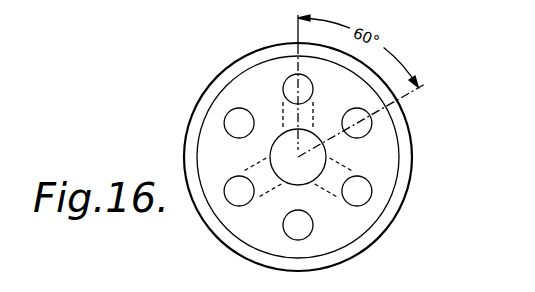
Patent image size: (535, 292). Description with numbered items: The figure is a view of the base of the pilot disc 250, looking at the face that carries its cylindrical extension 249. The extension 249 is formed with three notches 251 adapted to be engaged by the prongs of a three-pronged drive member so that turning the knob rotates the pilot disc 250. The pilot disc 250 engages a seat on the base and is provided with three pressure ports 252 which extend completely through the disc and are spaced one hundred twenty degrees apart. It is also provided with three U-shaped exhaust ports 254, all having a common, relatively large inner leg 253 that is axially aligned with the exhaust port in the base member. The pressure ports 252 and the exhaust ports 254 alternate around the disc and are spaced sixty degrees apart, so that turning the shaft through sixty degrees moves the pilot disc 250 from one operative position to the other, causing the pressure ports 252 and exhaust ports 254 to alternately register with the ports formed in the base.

The cylindrical extension 249 is at (191, 121).
The pilot disc 250 is at (383, 186).
The notches 251 is at (296, 164).
The pressure ports 252 is at (229, 116).
The inner leg 253 is at (298, 157).
The exhaust ports 254 is at (290, 79).